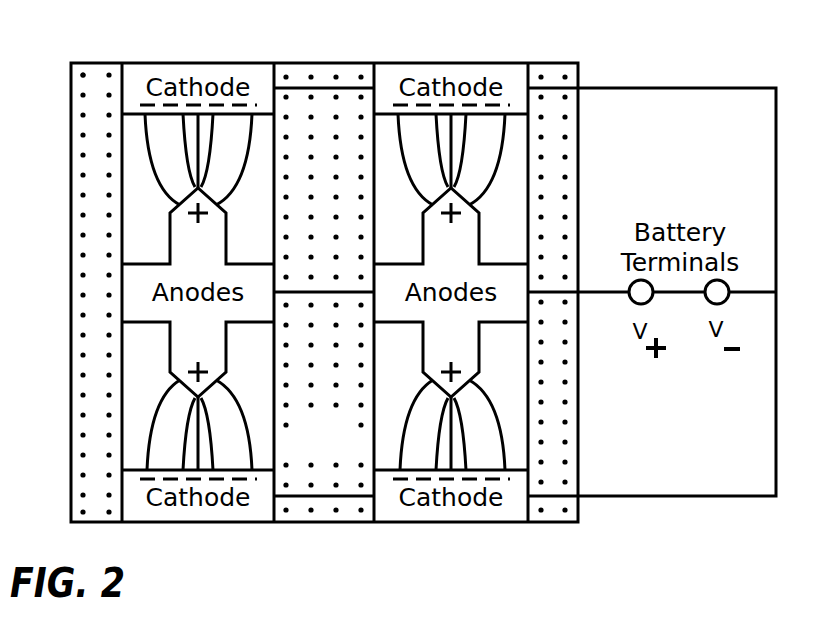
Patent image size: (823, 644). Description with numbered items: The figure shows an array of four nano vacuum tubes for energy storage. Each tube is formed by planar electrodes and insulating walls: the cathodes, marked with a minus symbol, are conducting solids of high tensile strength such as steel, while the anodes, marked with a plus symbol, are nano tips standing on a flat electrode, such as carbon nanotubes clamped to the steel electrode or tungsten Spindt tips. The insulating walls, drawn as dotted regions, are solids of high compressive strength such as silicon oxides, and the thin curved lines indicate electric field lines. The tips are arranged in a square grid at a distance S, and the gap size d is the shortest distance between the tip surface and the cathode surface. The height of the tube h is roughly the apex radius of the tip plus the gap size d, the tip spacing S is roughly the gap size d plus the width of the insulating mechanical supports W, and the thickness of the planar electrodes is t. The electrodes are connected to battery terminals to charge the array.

The height of the tube h is at (136, 114).
The gap size d is at (213, 187).
The thickness of the planar electrodes t is at (399, 36).
The width of the insulating mechanical supports W is at (274, 445).
The distance between the tips S is at (197, 527).